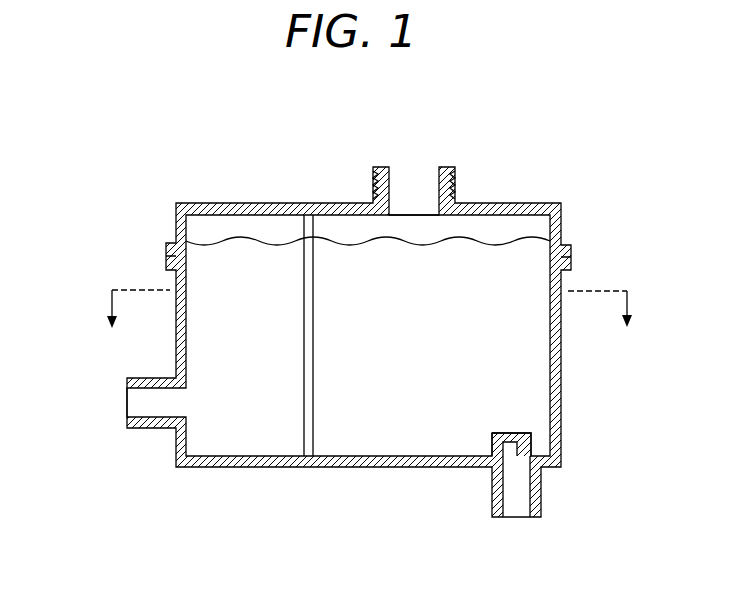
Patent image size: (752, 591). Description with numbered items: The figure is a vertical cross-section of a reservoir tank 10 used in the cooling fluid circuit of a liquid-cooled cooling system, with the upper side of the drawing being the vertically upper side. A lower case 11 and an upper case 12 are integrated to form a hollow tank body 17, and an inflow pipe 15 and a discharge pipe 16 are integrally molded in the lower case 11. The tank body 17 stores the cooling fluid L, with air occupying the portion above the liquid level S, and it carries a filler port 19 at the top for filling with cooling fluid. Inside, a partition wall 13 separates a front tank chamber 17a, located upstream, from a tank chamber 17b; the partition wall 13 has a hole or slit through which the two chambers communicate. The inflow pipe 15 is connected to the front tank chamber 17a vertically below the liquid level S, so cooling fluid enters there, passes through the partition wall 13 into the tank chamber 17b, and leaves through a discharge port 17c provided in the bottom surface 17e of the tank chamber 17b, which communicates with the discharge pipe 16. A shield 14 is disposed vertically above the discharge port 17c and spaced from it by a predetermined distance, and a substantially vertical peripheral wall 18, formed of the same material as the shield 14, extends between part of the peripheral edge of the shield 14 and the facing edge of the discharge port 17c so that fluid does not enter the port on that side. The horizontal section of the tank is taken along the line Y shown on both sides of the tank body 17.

The reservoir tank 10 is at (378, 582).
The lower case 11 is at (172, 452).
The upper case 12 is at (172, 212).
The partition wall 13 is at (295, 433).
The shield 14 is at (520, 431).
The inflow pipe 15 is at (146, 377).
The discharge pipe 16 is at (546, 497).
The tank body 17 is at (198, 196).
The front tank chamber 17a is at (259, 262).
The tank chamber 17b is at (349, 270).
The discharge port 17c is at (514, 452).
The bottom surface 17e is at (396, 450).
The peripheral wall 18 is at (489, 446).
The filler port 19 is at (465, 171).
The liquid level S is at (522, 242).
The cooling fluid L is at (529, 266).
The line Y- Y is at (369, 309).